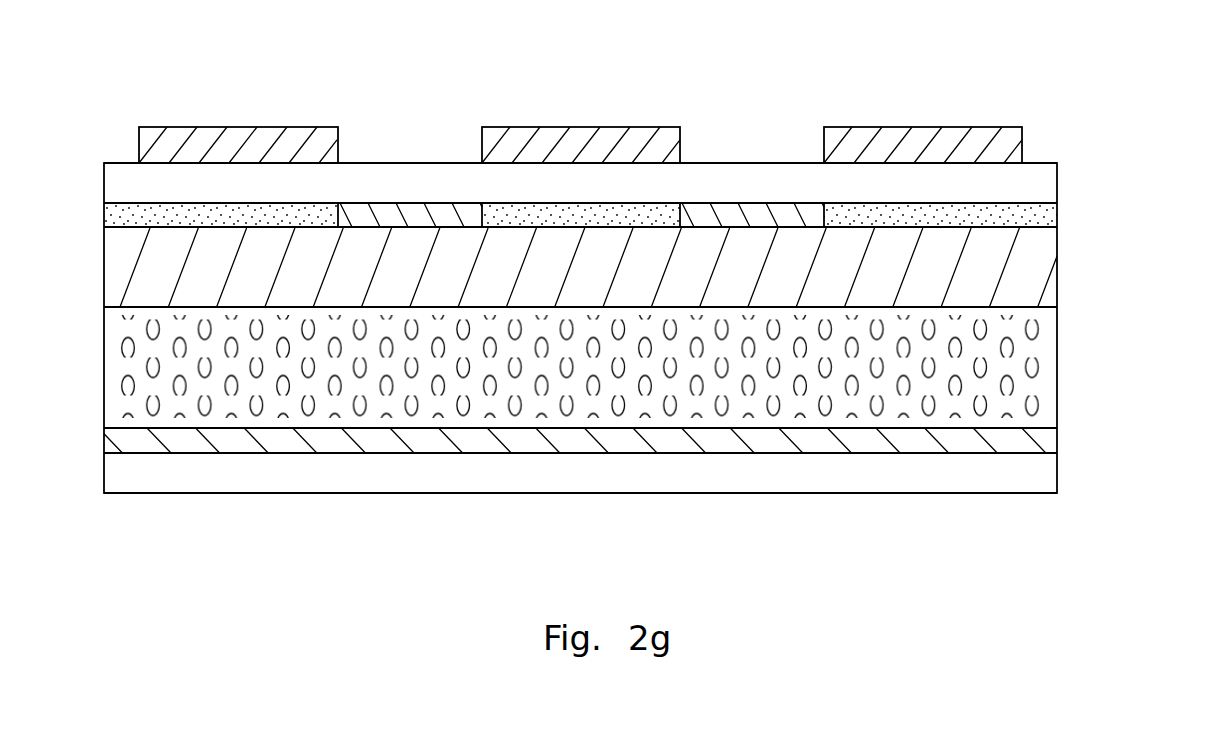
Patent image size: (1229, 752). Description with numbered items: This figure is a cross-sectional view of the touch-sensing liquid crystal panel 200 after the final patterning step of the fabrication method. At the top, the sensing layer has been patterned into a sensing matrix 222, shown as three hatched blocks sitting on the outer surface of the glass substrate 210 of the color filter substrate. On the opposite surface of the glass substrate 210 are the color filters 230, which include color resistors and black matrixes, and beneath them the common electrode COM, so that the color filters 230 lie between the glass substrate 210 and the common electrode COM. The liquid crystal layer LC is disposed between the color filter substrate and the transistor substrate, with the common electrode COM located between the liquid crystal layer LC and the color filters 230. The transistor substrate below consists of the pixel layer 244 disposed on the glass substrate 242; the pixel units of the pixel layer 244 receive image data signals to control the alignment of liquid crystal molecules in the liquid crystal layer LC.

The touch-sensing liquid crystal panel 200 is at (82, 87).
The sensing matrix 222 is at (1005, 142).
The glass substrate 210 is at (1042, 183).
The color filters 230 is at (1074, 216).
The common electrode COM is at (1043, 265).
The liquid crystal layer LC is at (1043, 362).
The pixel layer 244 is at (1043, 438).
The glass substrate 242 is at (1043, 476).